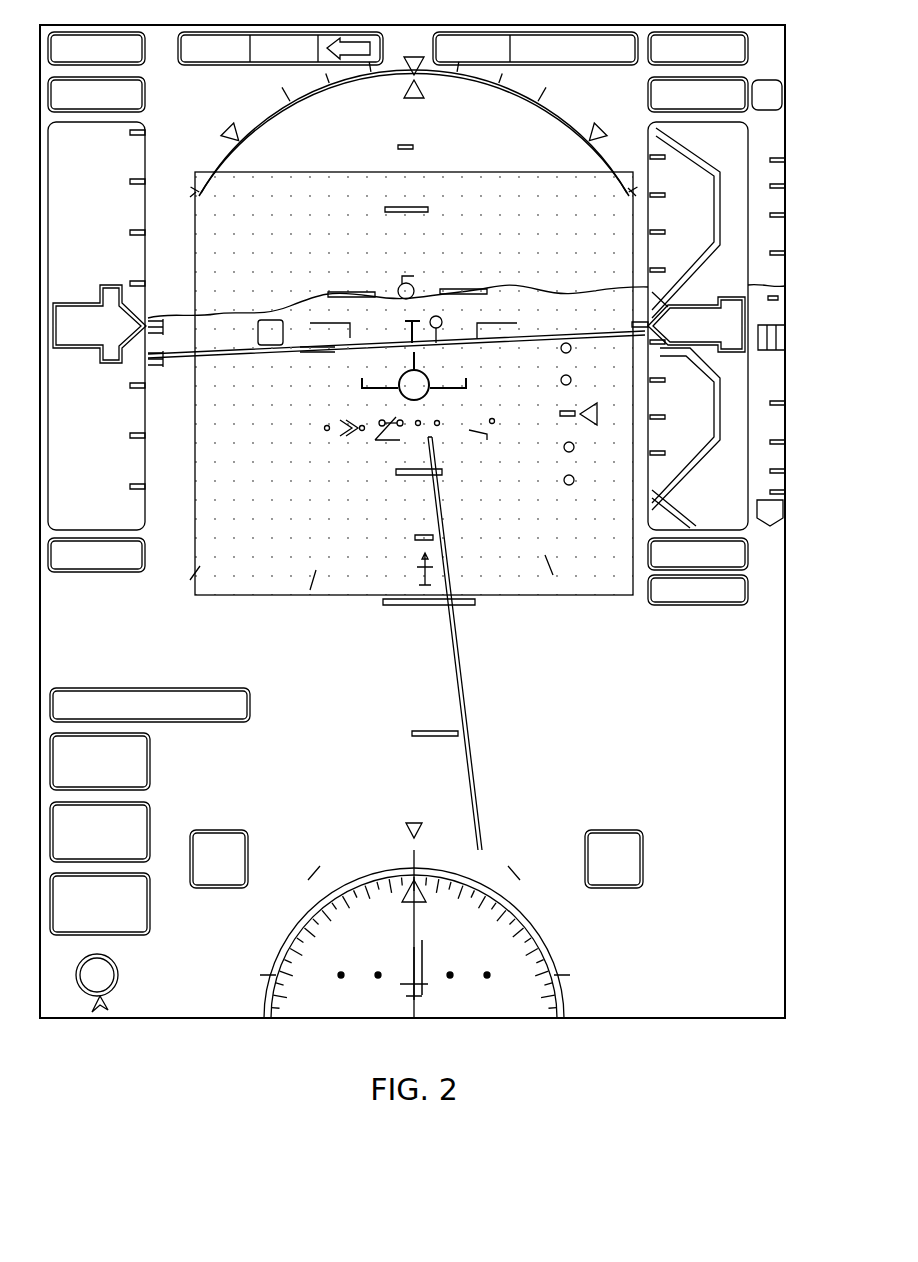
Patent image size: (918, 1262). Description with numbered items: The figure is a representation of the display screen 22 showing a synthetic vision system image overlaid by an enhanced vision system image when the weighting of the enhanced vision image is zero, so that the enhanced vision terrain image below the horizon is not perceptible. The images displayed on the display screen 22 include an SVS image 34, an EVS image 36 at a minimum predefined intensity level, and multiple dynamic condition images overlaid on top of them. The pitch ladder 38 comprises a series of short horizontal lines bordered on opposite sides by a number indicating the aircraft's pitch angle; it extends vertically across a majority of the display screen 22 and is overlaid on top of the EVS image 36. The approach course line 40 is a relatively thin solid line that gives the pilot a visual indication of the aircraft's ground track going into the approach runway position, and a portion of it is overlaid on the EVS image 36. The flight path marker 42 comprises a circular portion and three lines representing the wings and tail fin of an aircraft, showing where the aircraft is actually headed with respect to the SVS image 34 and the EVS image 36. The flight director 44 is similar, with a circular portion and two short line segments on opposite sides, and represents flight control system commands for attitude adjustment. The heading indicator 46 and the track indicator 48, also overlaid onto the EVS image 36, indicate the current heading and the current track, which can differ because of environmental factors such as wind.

The display screen 22 is at (146, 1020).
The SVS image 34 is at (786, 824).
The EVS image 36 is at (567, 597).
The pitch ladder 38 is at (422, 205).
The approach course line 40 is at (462, 680).
The flight path marker 42 is at (432, 385).
The flight director 44 is at (352, 292).
The heading indicator 46 is at (443, 325).
The track indicator 48 is at (407, 330).